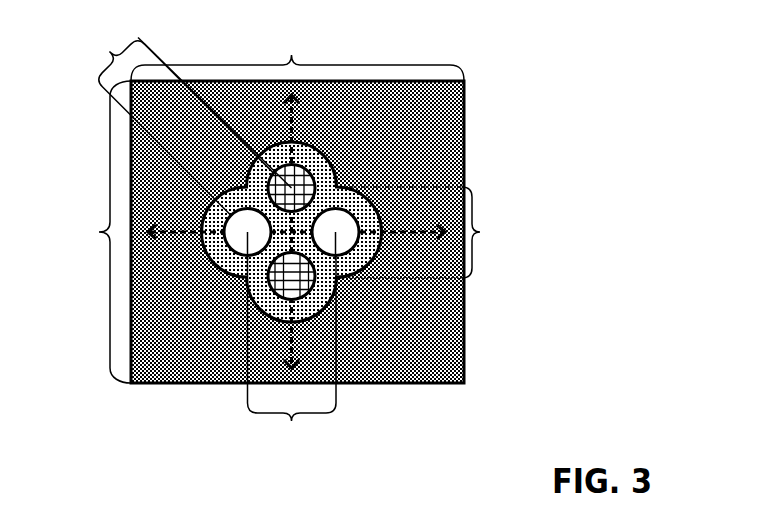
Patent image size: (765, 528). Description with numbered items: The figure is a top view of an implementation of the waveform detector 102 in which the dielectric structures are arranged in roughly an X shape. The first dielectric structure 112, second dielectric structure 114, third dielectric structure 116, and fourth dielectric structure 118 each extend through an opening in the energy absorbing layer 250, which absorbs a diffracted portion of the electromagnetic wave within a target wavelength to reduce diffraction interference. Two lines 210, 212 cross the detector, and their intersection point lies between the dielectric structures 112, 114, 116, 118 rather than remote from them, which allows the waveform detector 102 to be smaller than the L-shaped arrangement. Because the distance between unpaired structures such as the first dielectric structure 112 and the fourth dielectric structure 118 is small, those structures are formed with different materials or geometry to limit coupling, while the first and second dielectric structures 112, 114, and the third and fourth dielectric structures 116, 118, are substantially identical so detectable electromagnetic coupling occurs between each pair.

The waveform detector 102 is at (328, 236).
The first dielectric structure 112 is at (223, 196).
The second dielectric structure 114 is at (343, 256).
The third dielectric structure 116 is at (250, 289).
The fourth dielectric structure 118 is at (309, 170).
The line 210 is at (162, 228).
The line 212 is at (296, 101).
The energy absorbing layer 250 is at (434, 360).